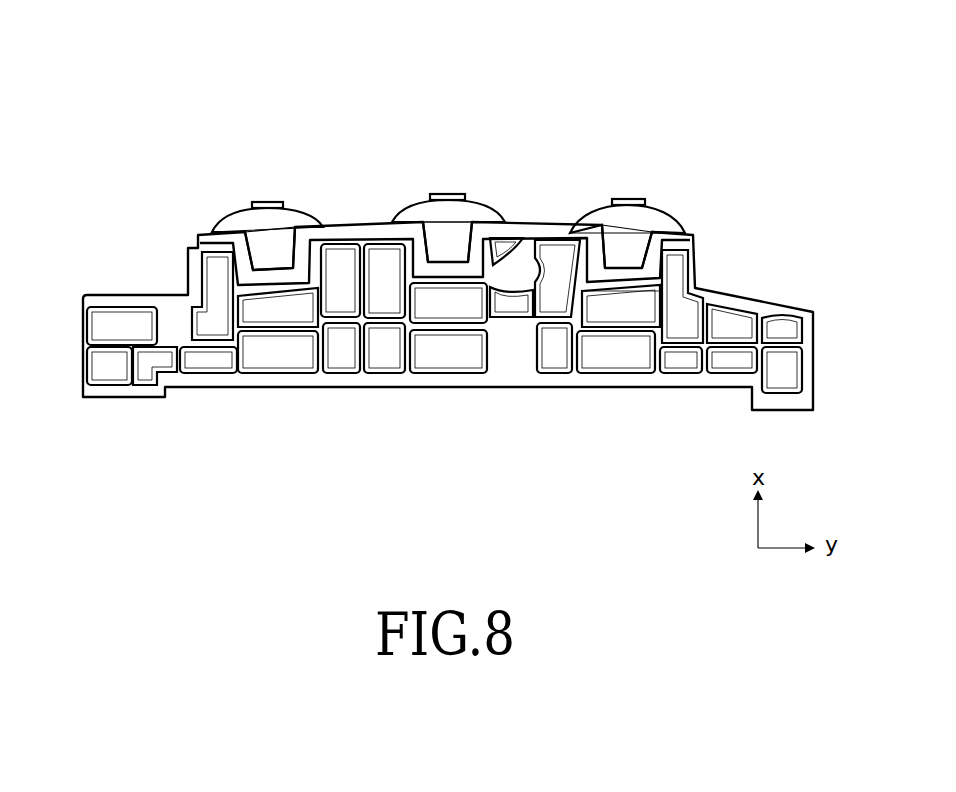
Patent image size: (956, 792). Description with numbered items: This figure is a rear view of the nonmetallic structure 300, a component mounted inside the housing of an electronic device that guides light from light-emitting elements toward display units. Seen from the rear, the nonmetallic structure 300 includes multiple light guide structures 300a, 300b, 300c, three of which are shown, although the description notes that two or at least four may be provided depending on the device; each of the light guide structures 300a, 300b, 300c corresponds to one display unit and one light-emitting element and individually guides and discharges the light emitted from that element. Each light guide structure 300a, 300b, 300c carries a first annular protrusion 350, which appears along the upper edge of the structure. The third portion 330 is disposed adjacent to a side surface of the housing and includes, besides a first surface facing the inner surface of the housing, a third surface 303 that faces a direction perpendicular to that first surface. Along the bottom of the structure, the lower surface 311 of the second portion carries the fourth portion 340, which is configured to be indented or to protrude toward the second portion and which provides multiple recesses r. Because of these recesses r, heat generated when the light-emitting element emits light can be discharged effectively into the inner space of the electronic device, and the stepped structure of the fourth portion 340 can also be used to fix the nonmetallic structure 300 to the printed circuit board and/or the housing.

The nonmetallic structure 300 is at (148, 78).
The light guide structure 300a is at (297, 183).
The light guide structure 300b is at (477, 177).
The light guide structure 300c is at (658, 182).
The third surface 303 is at (461, 238).
The lower surface 311 is at (320, 380).
The third portion 330 is at (233, 212).
The fourth portion 340 is at (590, 372).
The first annular protrusion 350 is at (265, 200).
The recess r is at (598, 308).